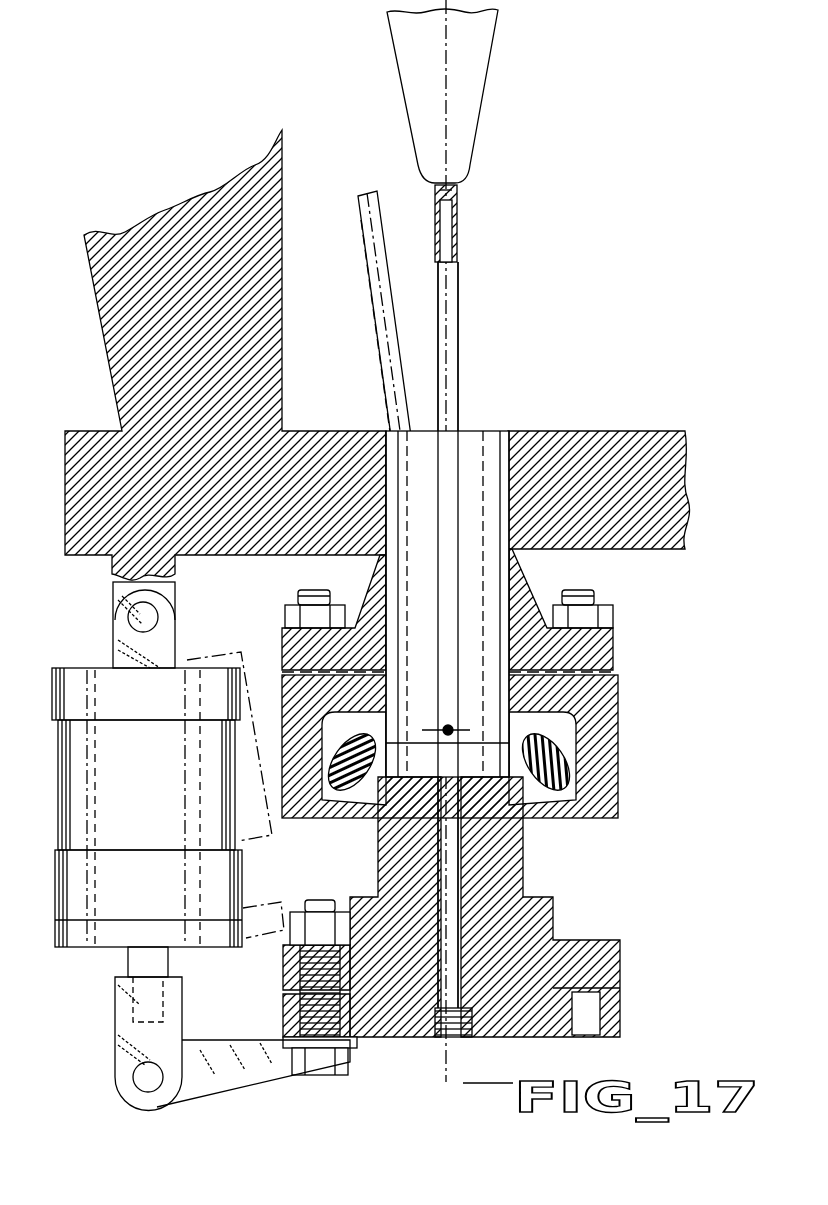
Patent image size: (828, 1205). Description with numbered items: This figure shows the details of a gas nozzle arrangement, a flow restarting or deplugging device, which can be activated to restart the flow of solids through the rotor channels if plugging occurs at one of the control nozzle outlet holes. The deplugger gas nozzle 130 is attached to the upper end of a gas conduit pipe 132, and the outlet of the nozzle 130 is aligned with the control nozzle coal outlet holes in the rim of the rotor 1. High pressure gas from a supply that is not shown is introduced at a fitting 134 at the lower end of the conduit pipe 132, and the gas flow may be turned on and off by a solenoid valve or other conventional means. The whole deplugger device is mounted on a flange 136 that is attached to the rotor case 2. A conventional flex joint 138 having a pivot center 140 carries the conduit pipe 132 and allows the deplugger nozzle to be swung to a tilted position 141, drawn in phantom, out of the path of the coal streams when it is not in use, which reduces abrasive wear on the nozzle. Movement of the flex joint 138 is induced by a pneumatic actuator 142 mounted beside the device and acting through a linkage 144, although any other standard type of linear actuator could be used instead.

The rotor 1 is at (404, 113).
The rotor case 2 is at (114, 350).
The deplugger gas nozzle 130 is at (452, 184).
The gas conduit pipe 132 is at (458, 320).
The fitting 134 is at (442, 1038).
The flange 136 is at (600, 628).
The flex joint 138 is at (618, 752).
The pivot center 140 is at (456, 729).
The position 141 is at (360, 200).
The pneumatic actuator 142 is at (157, 785).
The linkage 144 is at (234, 1066).